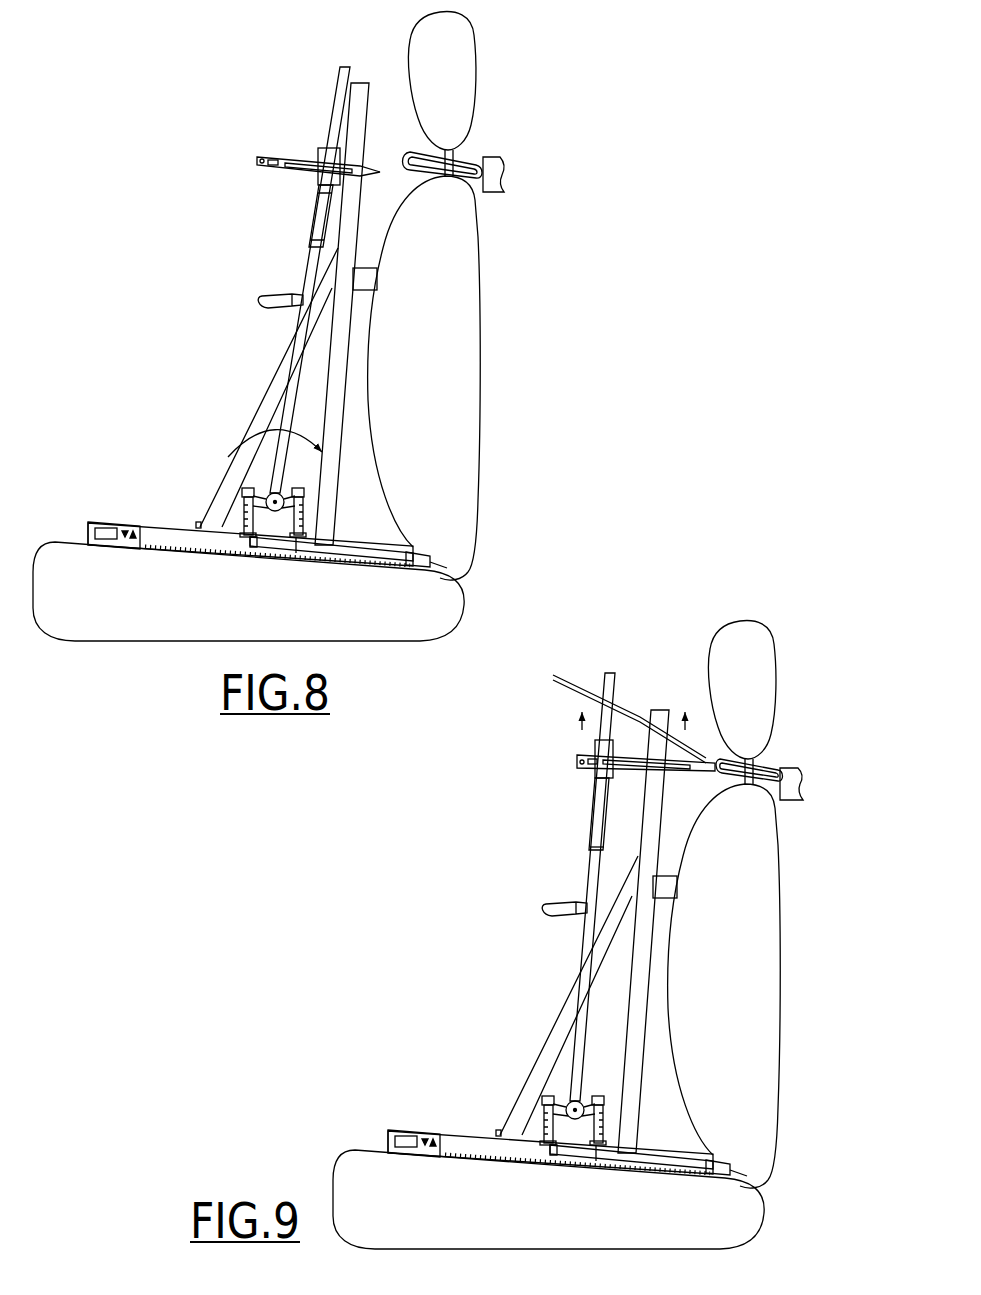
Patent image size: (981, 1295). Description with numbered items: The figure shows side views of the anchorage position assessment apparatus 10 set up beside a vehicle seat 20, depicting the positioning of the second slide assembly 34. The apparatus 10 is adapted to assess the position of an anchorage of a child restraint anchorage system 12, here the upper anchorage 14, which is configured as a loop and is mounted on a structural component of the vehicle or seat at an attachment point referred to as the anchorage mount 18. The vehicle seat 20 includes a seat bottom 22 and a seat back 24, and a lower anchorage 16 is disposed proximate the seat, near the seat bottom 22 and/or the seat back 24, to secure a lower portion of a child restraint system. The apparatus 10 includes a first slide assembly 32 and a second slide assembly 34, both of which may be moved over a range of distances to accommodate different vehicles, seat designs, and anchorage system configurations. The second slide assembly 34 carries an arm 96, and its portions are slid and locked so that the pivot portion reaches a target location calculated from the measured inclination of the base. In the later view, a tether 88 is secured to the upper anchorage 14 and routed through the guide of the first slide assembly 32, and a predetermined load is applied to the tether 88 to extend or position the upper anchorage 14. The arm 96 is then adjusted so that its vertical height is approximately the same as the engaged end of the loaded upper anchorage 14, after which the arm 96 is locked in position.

In FIG. 8, the anchorage position assessment apparatus 10 is at (177, 133).
In FIG. 9, the anchorage position assessment apparatus 10 is at (515, 715).
In FIG. 8, the child restraint anchorage system 12 is at (545, 115).
In FIG. 9, the child restraint anchorage system 12 is at (815, 690).
In FIG. 8, the upper anchorage 14 is at (478, 158).
In FIG. 9, the upper anchorage 14 is at (778, 765).
In FIG. 8, the lower anchorage 16 is at (420, 575).
In FIG. 9, the lower anchorage 16 is at (720, 1183).
In FIG. 8, the anchorage mount 18 is at (478, 186).
In FIG. 9, the anchorage mount 18 is at (780, 800).
In FIG. 8, the vehicle seat 20 is at (480, 581).
In FIG. 9, the vehicle seat 20 is at (780, 1189).
In FIG. 8, the seat bottom 22 is at (248, 591).
In FIG. 9, the seat bottom 22 is at (548, 1199).
In FIG. 8, the seat back 24 is at (424, 374).
In FIG. 9, the seat back 24 is at (724, 982).
In FIG. 8, the first slide assembly 32 is at (362, 72).
In FIG. 9, the first slide assembly 32 is at (665, 685).
In FIG. 8, the second slide assembly 34 is at (280, 127).
In FIG. 9, the second slide assembly 34 is at (597, 678).
In FIG. 9, the tether 88 is at (625, 715).
In FIG. 8, the arm 96 is at (257, 159).
In FIG. 9, the arm 96 is at (693, 771).